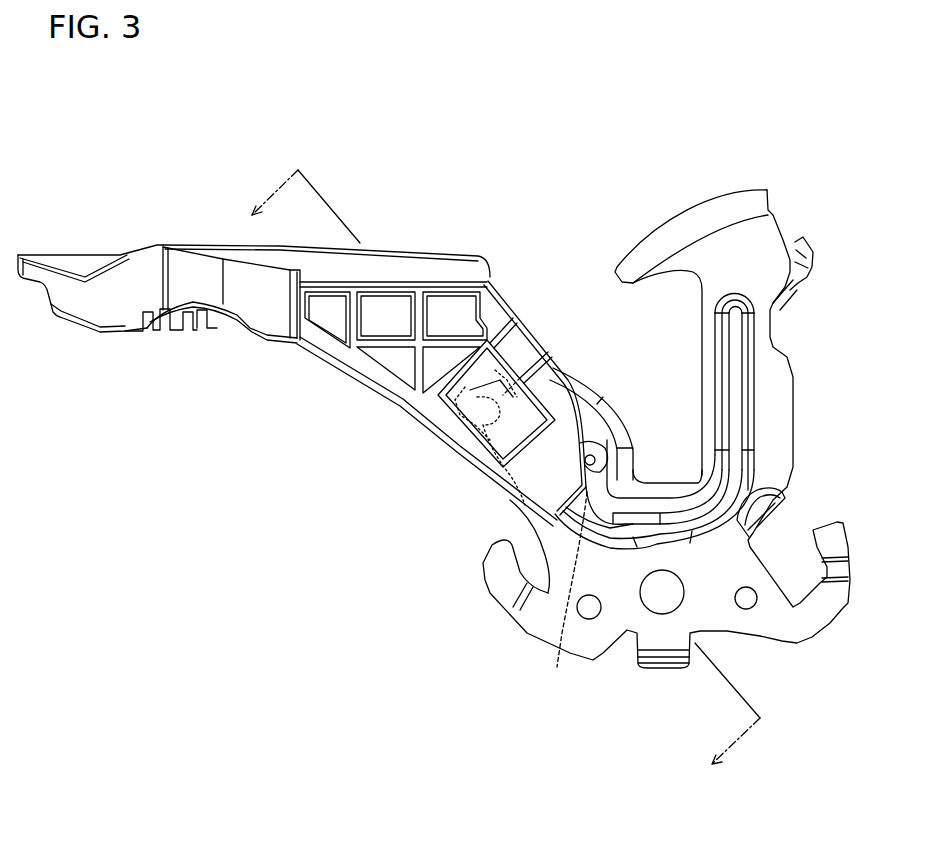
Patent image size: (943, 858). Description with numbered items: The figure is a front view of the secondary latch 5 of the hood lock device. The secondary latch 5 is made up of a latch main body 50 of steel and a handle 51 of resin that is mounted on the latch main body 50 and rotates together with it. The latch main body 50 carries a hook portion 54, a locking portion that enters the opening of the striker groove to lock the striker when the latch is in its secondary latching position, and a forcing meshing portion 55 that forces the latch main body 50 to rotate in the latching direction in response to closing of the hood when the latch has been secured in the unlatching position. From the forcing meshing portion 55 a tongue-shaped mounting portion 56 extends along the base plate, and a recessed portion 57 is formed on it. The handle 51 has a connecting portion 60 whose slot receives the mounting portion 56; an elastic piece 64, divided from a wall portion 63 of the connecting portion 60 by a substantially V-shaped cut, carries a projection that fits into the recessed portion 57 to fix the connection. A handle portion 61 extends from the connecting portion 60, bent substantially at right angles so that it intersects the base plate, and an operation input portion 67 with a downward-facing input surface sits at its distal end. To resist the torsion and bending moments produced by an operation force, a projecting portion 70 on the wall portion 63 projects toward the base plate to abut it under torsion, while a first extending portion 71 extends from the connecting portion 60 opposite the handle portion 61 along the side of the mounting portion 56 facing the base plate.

The secondary latch 5 is at (836, 73).
The latch main body 50 is at (713, 192).
The handle 51 is at (186, 240).
The hook portion 54 is at (668, 230).
The forcing meshing portion 55 is at (616, 417).
The mounting portion 56 is at (532, 466).
The recessed portion 57 is at (536, 411).
The connecting portion 60 is at (406, 366).
The handle portion 61 is at (241, 303).
The wall portion 63 is at (577, 377).
The elastic piece 64 is at (547, 368).
The operation input portion 67 is at (57, 268).
The projecting portion 70 is at (522, 337).
The first extending portion 71 is at (557, 667).